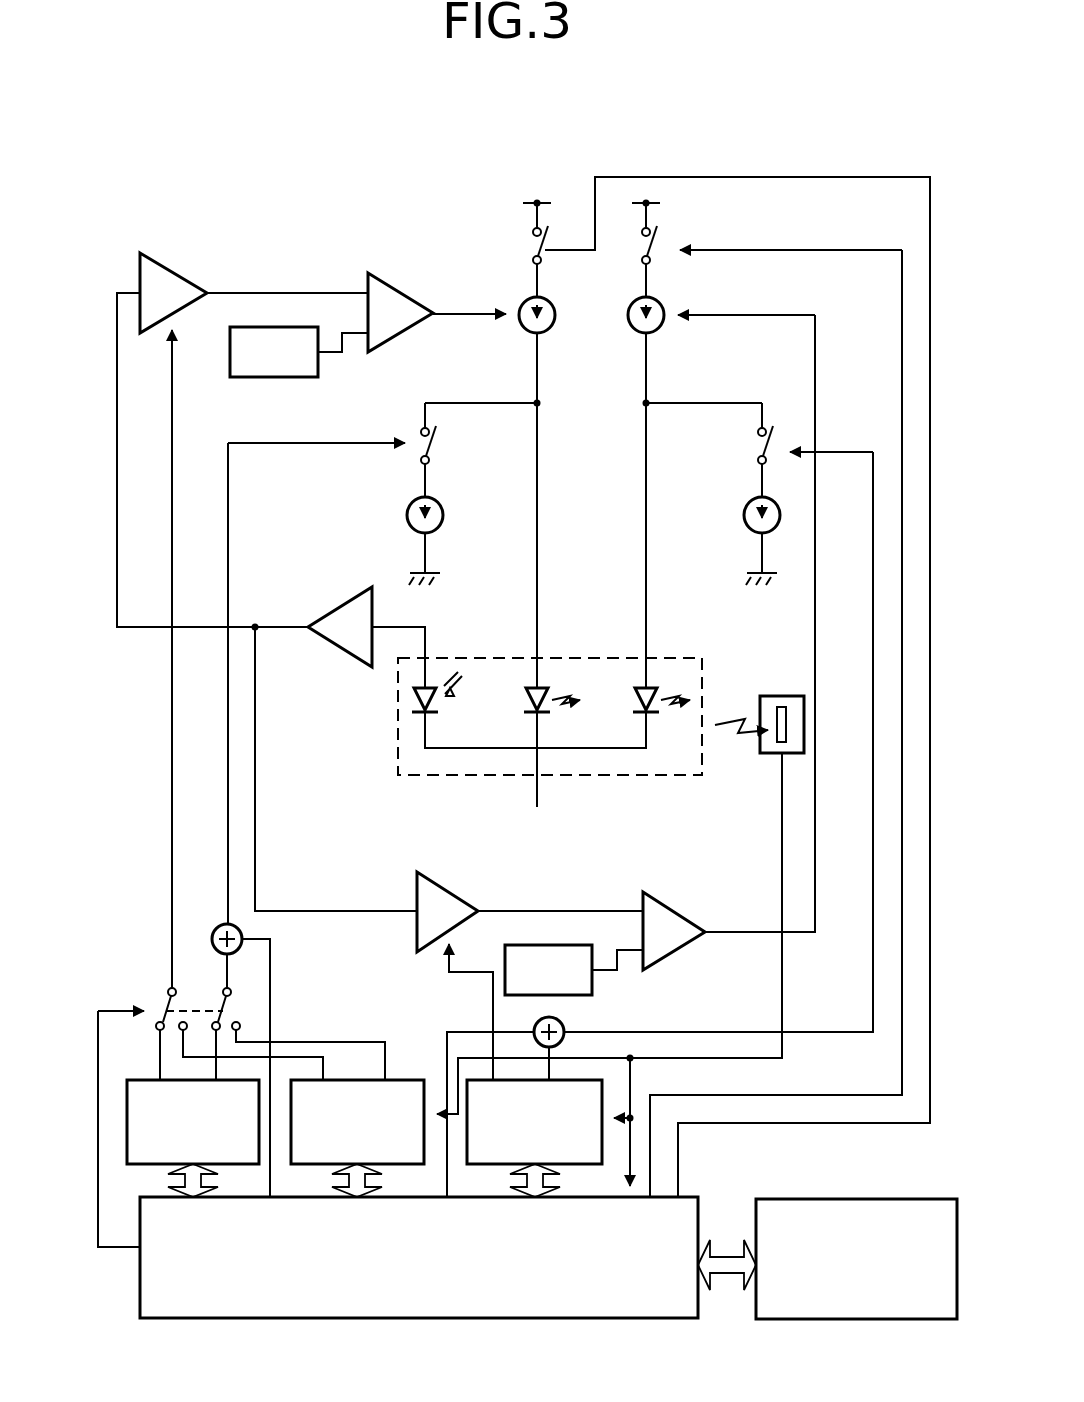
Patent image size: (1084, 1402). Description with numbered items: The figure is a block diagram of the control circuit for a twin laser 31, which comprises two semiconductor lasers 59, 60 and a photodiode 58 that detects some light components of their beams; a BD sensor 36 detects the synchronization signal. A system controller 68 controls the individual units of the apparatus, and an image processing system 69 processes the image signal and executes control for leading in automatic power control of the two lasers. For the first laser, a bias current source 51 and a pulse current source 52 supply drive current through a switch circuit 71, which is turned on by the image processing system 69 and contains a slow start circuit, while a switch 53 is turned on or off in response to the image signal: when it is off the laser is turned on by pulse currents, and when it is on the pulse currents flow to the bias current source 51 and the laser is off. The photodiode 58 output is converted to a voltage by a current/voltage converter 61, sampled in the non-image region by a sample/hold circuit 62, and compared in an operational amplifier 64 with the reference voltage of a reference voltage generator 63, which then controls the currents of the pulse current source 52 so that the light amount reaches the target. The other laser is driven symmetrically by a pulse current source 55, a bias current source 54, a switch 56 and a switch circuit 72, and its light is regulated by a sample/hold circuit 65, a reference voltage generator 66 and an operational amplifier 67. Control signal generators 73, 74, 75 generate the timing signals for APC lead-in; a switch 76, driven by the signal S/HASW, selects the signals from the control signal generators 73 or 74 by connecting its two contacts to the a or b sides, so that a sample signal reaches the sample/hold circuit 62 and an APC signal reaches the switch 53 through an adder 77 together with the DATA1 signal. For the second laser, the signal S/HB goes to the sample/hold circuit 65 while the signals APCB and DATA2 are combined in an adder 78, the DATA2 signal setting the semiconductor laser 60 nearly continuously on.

The twin laser 31 is at (590, 656).
The BD sensor 36 is at (782, 696).
The bias current source 51 is at (446, 515).
The pulse current source 52 is at (556, 307).
The switch 53 is at (440, 448).
The bias current source 54 is at (744, 516).
The pulse current source 55 is at (632, 328).
The switch 56 is at (750, 450).
The photodiode 58 is at (410, 706).
The semiconductor laser 59 is at (526, 706).
The semiconductor laser 60 is at (635, 706).
The current/voltage converter 61 is at (336, 648).
The sample/hold circuit 62 is at (176, 272).
The reference voltage generator 63 is at (270, 380).
The operational amplifier 64 is at (398, 290).
The sample/hold circuit 65 is at (452, 892).
The reference voltage generator 66 is at (536, 944).
The operational amplifier 67 is at (674, 910).
The system controller 68 is at (858, 1198).
The image processing system 69 is at (696, 1196).
The switch circuit 71 is at (526, 249).
The switch circuit 72 is at (640, 246).
The control signal generator 73 is at (134, 1079).
The control signal generator 74 is at (406, 1079).
The control signal generator 75 is at (566, 1166).
The switch 76 is at (160, 994).
The adder 77 is at (214, 931).
The adder 78 is at (562, 1020).